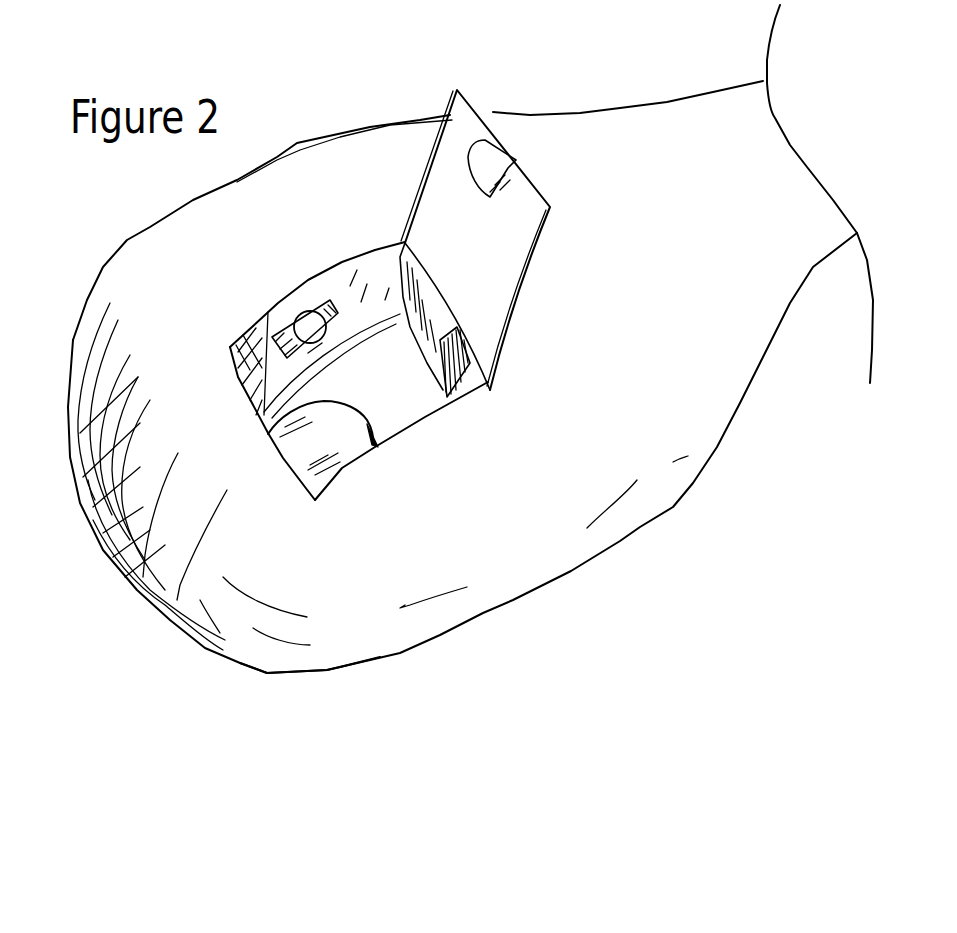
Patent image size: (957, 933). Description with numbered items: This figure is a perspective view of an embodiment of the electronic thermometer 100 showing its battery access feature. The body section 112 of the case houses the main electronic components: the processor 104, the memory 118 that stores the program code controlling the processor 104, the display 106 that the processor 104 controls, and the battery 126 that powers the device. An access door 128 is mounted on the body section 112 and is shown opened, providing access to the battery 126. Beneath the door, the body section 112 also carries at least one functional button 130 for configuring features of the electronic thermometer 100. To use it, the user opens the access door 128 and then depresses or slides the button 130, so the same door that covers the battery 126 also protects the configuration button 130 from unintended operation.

The electronic thermometer 100 is at (470, 339).
The processor 104 is at (402, 290).
The display 106 is at (407, 391).
The body section 112 is at (263, 672).
The memory 118 is at (497, 372).
The battery 126 is at (342, 437).
The access door 128 is at (528, 180).
The functional button 130 is at (310, 325).